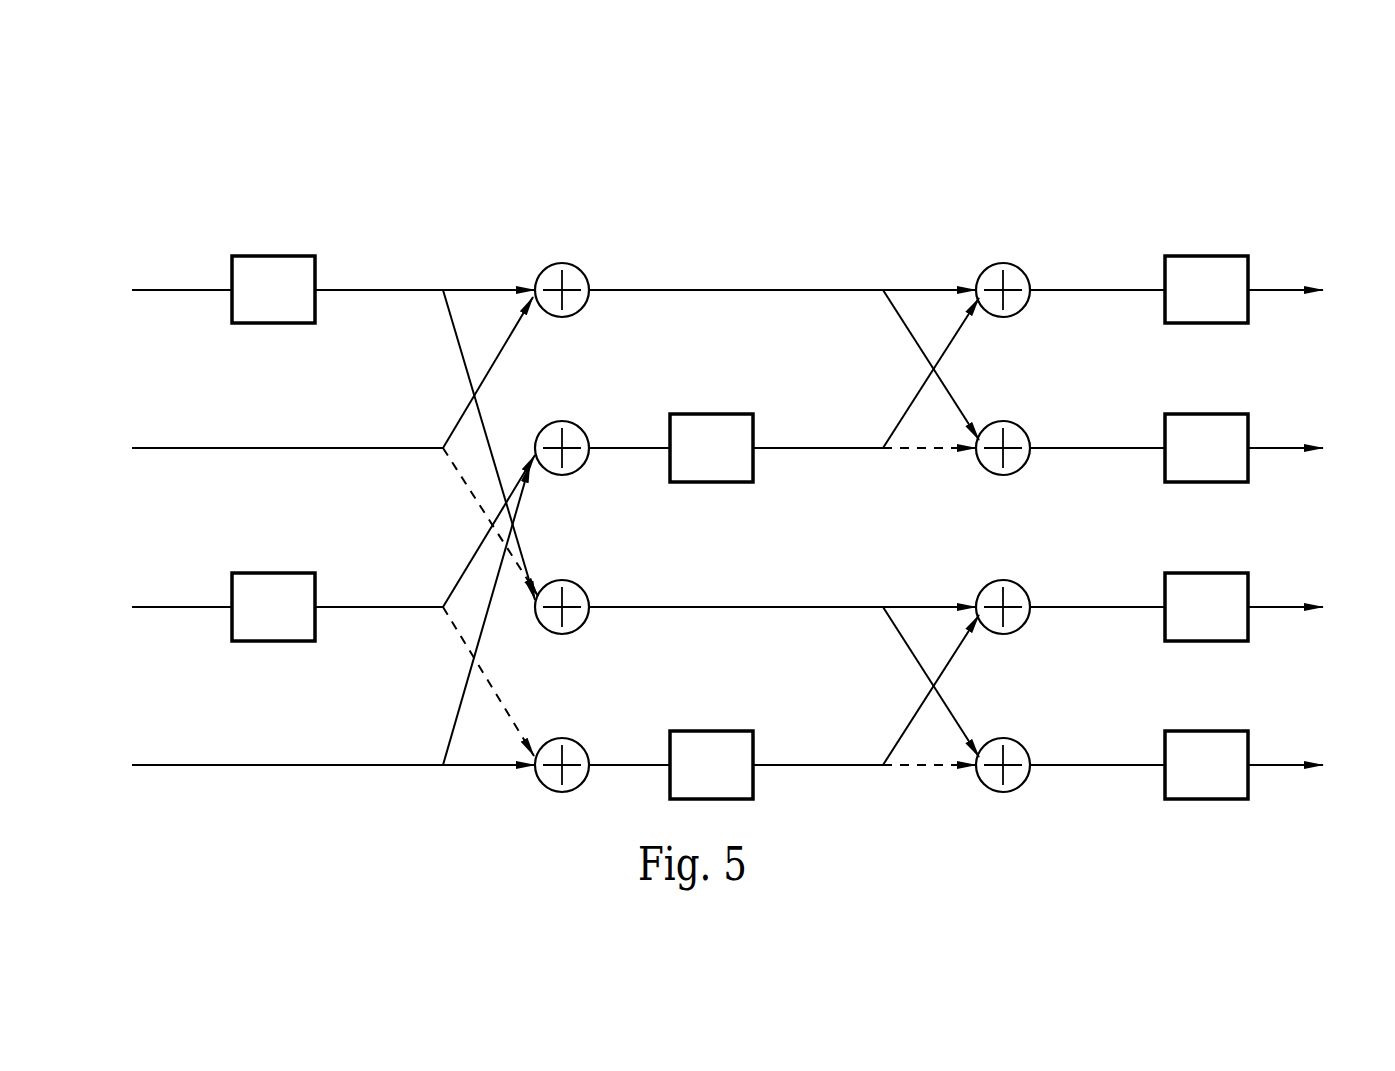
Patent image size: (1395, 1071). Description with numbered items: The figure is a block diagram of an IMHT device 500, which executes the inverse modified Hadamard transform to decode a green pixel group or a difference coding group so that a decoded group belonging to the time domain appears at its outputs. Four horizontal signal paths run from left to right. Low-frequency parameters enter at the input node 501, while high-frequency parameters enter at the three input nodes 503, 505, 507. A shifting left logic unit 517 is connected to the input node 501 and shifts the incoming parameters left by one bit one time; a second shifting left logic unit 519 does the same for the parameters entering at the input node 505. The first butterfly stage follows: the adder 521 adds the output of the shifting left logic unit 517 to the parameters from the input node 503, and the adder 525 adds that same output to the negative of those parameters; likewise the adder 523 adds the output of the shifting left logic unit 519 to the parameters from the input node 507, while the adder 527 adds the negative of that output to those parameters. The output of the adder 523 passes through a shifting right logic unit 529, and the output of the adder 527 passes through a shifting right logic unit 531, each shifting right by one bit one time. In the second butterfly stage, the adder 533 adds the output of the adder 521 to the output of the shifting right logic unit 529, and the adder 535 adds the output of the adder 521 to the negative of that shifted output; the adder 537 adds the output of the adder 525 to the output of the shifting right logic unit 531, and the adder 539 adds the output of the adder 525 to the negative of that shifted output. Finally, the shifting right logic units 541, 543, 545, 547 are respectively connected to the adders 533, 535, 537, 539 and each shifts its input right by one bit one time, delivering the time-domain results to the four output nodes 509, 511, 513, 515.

The IMHT device 500 is at (1147, 163).
The input node 501 is at (306, 288).
The input node 503 is at (260, 446).
The input node 505 is at (155, 605).
The input node 507 is at (306, 763).
The output node 509 is at (1312, 288).
The output node 511 is at (1312, 446).
The output node 513 is at (1312, 605).
The output node 515 is at (1312, 763).
The shifting left logic unit 517 is at (316, 270).
The shifting left logic unit 519 is at (316, 587).
The adder 521 is at (570, 264).
The adder 523 is at (570, 422).
The adder 525 is at (570, 581).
The adder 527 is at (578, 742).
The shifting right logic unit 529 is at (755, 428).
The shifting right logic unit 531 is at (755, 748).
The adder 533 is at (1012, 266).
The adder 535 is at (1012, 424).
The adder 537 is at (1012, 583).
The adder 539 is at (1012, 742).
The shifting right logic unit 541 is at (1250, 272).
The shifting right logic unit 543 is at (1250, 430).
The shifting right logic unit 545 is at (1250, 588).
The shifting right logic unit 547 is at (1250, 746).